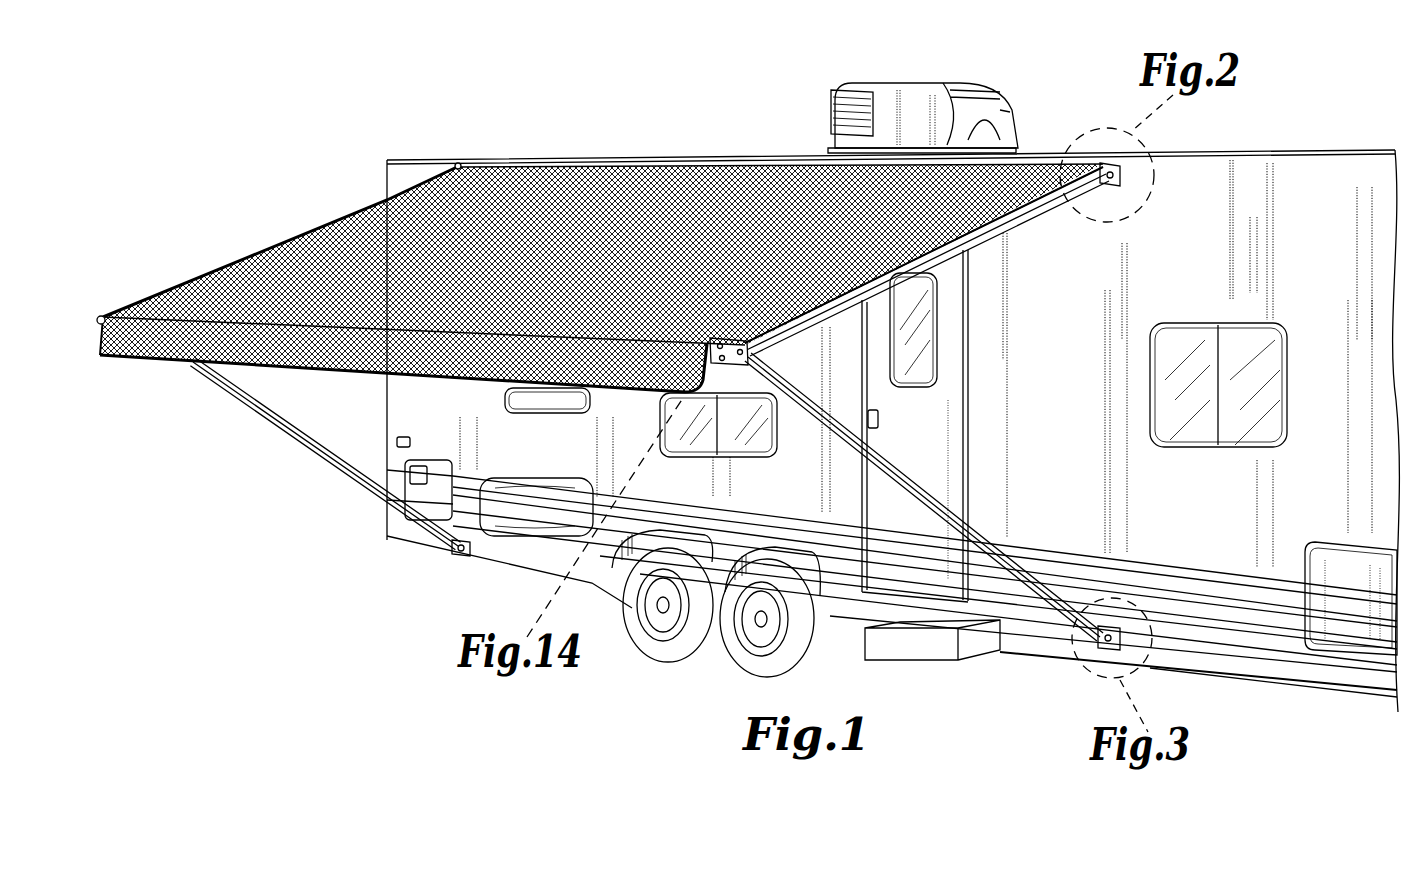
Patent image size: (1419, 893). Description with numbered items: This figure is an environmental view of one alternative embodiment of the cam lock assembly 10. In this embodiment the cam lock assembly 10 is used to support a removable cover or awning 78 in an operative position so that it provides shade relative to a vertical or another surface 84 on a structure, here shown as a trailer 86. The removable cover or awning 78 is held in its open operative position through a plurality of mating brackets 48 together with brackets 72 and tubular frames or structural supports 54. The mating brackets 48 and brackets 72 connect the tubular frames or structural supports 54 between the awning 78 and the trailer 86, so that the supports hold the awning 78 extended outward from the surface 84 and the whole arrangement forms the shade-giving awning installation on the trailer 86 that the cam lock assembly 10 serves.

The cam lock assembly 10 is at (1098, 108).
The mating brackets 48 is at (452, 556).
The tubular frames or structural supports 54 is at (1028, 167).
The brackets 72 is at (742, 350).
The removable cover or awning 78 is at (560, 188).
The vertical or another surface 84 is at (1336, 183).
The trailer 86 is at (1289, 150).